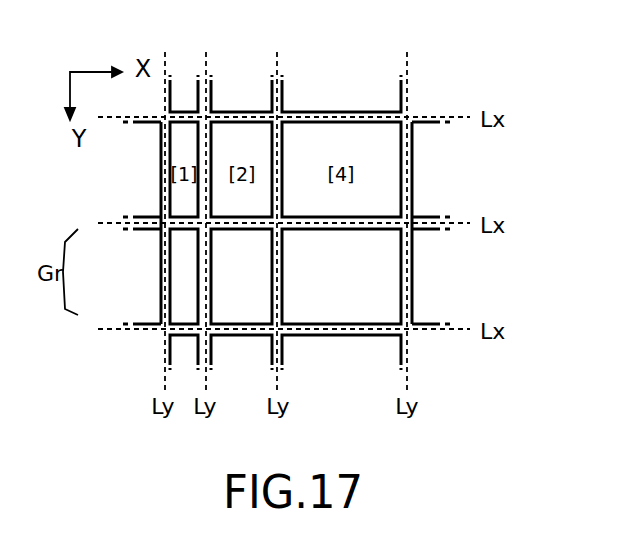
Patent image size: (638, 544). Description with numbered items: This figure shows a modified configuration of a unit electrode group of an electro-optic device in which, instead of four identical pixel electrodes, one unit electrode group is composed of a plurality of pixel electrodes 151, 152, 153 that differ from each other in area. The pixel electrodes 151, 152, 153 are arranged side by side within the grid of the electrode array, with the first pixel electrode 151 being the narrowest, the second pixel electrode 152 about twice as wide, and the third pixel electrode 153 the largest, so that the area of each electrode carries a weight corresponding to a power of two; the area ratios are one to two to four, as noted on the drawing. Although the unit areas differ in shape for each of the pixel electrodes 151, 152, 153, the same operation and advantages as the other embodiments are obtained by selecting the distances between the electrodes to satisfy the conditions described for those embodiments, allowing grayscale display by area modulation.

The pixel electrode 151 is at (183, 248).
The pixel electrode 152 is at (238, 272).
The pixel electrode 153 is at (302, 306).